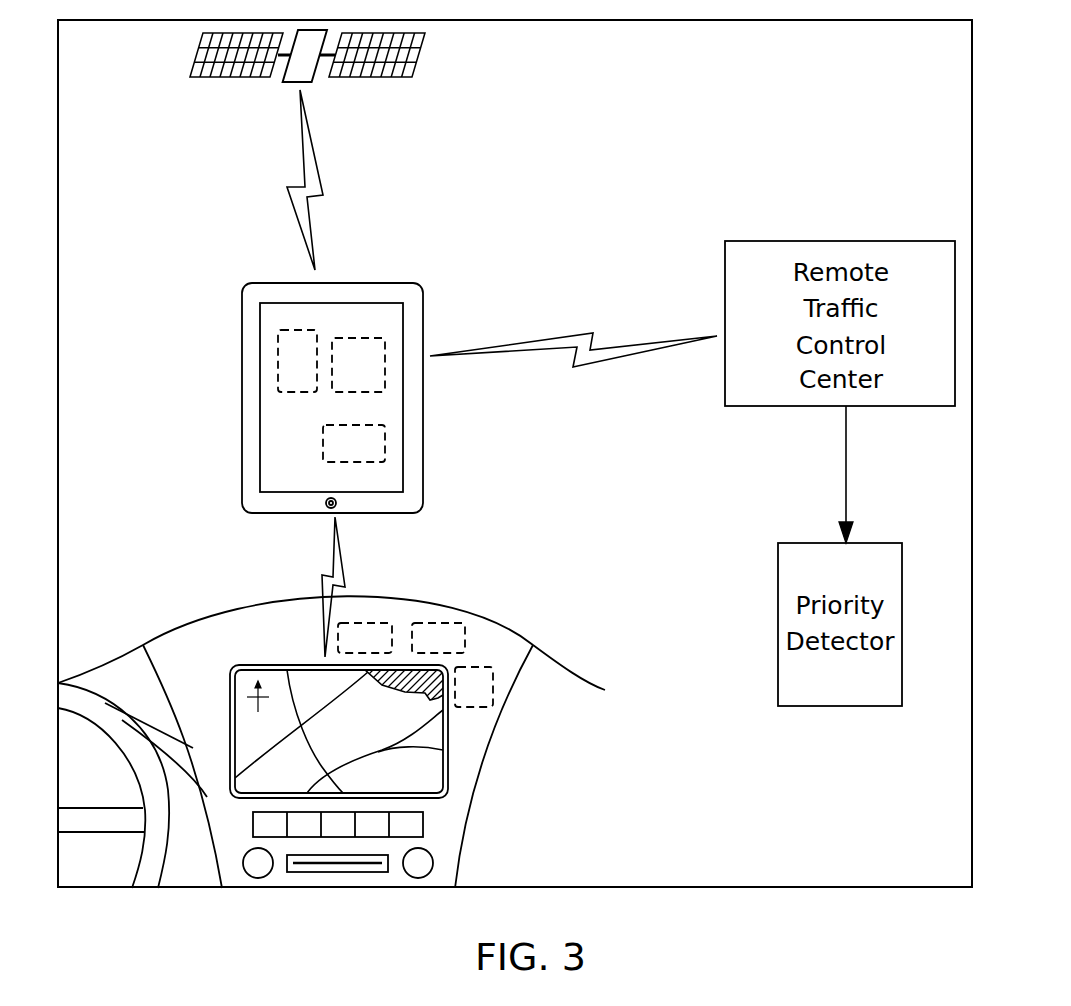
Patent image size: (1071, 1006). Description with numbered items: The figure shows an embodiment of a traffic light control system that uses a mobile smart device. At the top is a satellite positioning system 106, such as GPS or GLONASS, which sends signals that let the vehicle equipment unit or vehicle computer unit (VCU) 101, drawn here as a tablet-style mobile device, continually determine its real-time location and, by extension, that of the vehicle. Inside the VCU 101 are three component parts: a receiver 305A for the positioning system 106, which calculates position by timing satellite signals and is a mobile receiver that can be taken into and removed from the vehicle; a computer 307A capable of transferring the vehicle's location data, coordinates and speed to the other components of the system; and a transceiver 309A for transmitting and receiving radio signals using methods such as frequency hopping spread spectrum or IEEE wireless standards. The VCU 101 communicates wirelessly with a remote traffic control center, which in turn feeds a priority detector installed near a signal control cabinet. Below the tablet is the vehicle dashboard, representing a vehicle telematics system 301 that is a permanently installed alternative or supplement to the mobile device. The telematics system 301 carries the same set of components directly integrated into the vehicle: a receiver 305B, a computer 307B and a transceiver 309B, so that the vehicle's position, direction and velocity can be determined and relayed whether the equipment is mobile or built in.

The positioning system 106 is at (423, 52).
The vehicle equipment unit/vehicle computer unit (VCU) 101 is at (421, 293).
The receiver 305A is at (300, 330).
The transceiver 309A is at (385, 357).
The computer 307A is at (385, 440).
The vehicle telematics system 301 is at (517, 632).
The receiver 305B is at (372, 623).
The computer 307B is at (445, 623).
The transceiver 309B is at (493, 682).